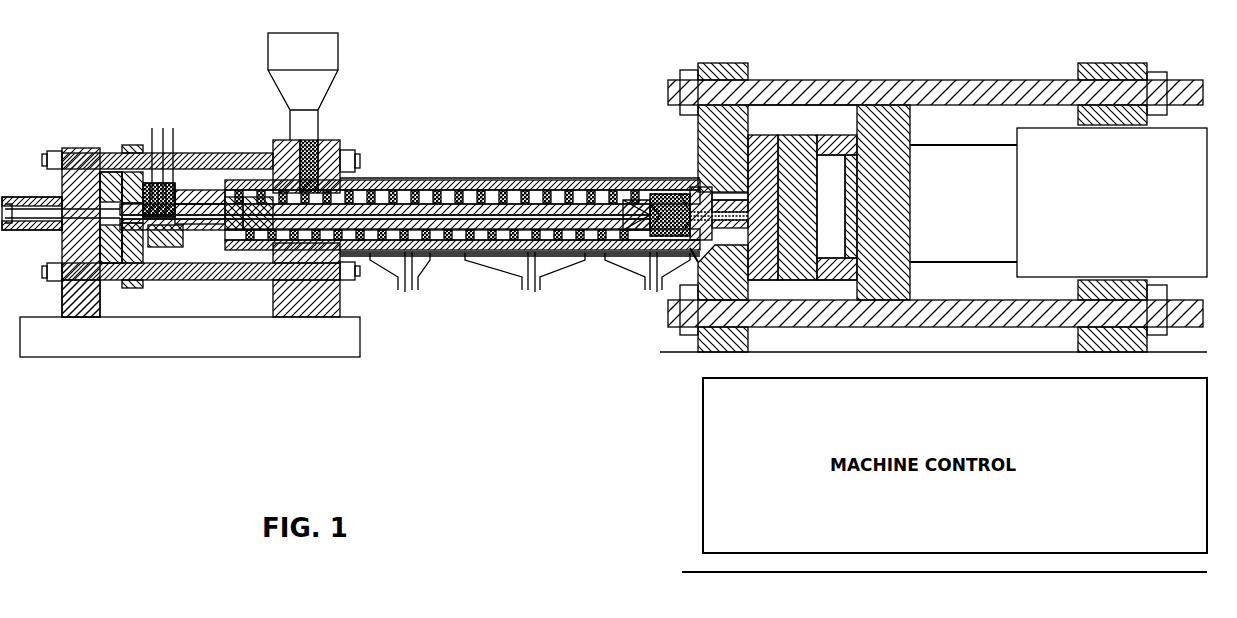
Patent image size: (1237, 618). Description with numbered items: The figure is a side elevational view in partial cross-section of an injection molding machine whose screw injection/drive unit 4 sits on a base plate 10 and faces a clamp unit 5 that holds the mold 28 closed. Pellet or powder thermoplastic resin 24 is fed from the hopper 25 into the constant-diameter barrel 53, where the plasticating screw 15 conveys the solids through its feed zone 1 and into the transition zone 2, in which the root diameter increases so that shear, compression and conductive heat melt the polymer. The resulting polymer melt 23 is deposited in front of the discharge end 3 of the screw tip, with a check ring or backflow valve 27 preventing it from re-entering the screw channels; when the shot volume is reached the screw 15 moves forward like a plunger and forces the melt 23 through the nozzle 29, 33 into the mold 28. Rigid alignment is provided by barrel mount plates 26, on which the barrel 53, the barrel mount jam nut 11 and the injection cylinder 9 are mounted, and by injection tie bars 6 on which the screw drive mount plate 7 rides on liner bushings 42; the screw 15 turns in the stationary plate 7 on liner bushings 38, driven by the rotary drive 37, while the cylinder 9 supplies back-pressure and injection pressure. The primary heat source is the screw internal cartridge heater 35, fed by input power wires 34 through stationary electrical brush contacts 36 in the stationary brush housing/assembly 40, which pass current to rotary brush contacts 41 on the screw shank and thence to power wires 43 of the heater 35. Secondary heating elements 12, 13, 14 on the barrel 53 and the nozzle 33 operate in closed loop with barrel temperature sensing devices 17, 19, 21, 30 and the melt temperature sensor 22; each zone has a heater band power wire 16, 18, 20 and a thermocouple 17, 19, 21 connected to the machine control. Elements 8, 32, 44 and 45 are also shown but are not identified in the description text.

The feed zone 1 is at (396, 131).
The transition zone 2 is at (520, 145).
The discharge end 3 is at (606, 106).
The screw injection/drive unit 4 is at (136, 111).
The clamp unit 5 is at (782, 57).
The injection tie bars 6 is at (192, 161).
The screw drive mount plate 7 is at (128, 150).
The support plate 8 is at (96, 302).
The injection cylinder 9 is at (22, 231).
The base plate 10 is at (35, 318).
The barrel mount jam nut 11 is at (262, 243).
The heating element 12 is at (385, 182).
The heating element 13 is at (528, 178).
The heating element 14 is at (605, 180).
The screw 15 is at (228, 200).
The heater band power wire 16 is at (401, 293).
The heater band thermocouple 17 is at (416, 291).
The heater band power wire 18 is at (548, 302).
The heater band thermocouple 19 is at (703, 443).
The heater band power wire 20 is at (647, 292).
The heater band thermocouple 21 is at (659, 293).
The melt temperature sensor 22 is at (685, 210).
The polymer melt 23 is at (662, 200).
The thermoplastic resin 24 is at (322, 147).
The hopper 25 is at (268, 57).
The barrel mount plates 26 is at (276, 301).
The check ring or backflow valve 27 is at (636, 205).
The mold 28 is at (786, 160).
The nozzle 29 is at (699, 262).
The barrel temperature sensing device 30 is at (731, 226).
The nozzle 32 is at (705, 186).
The nozzle 33 is at (726, 185).
The input power wires 34 is at (175, 150).
The screw internal cartridge heater 35 is at (478, 205).
The electrical brush contacts 36 is at (200, 200).
The rotary drive 37 is at (105, 195).
The liner bushings 38 is at (118, 240).
The stationary brush housing/assembly 40 is at (156, 241).
The rotary brush contacts 41 is at (180, 236).
The liner bushings 42 is at (142, 288).
The power wires 43 is at (254, 214).
The hydraulic cylinder 44 is at (117, 200).
The melt front 45 is at (605, 241).
The barrel 53 is at (575, 188).